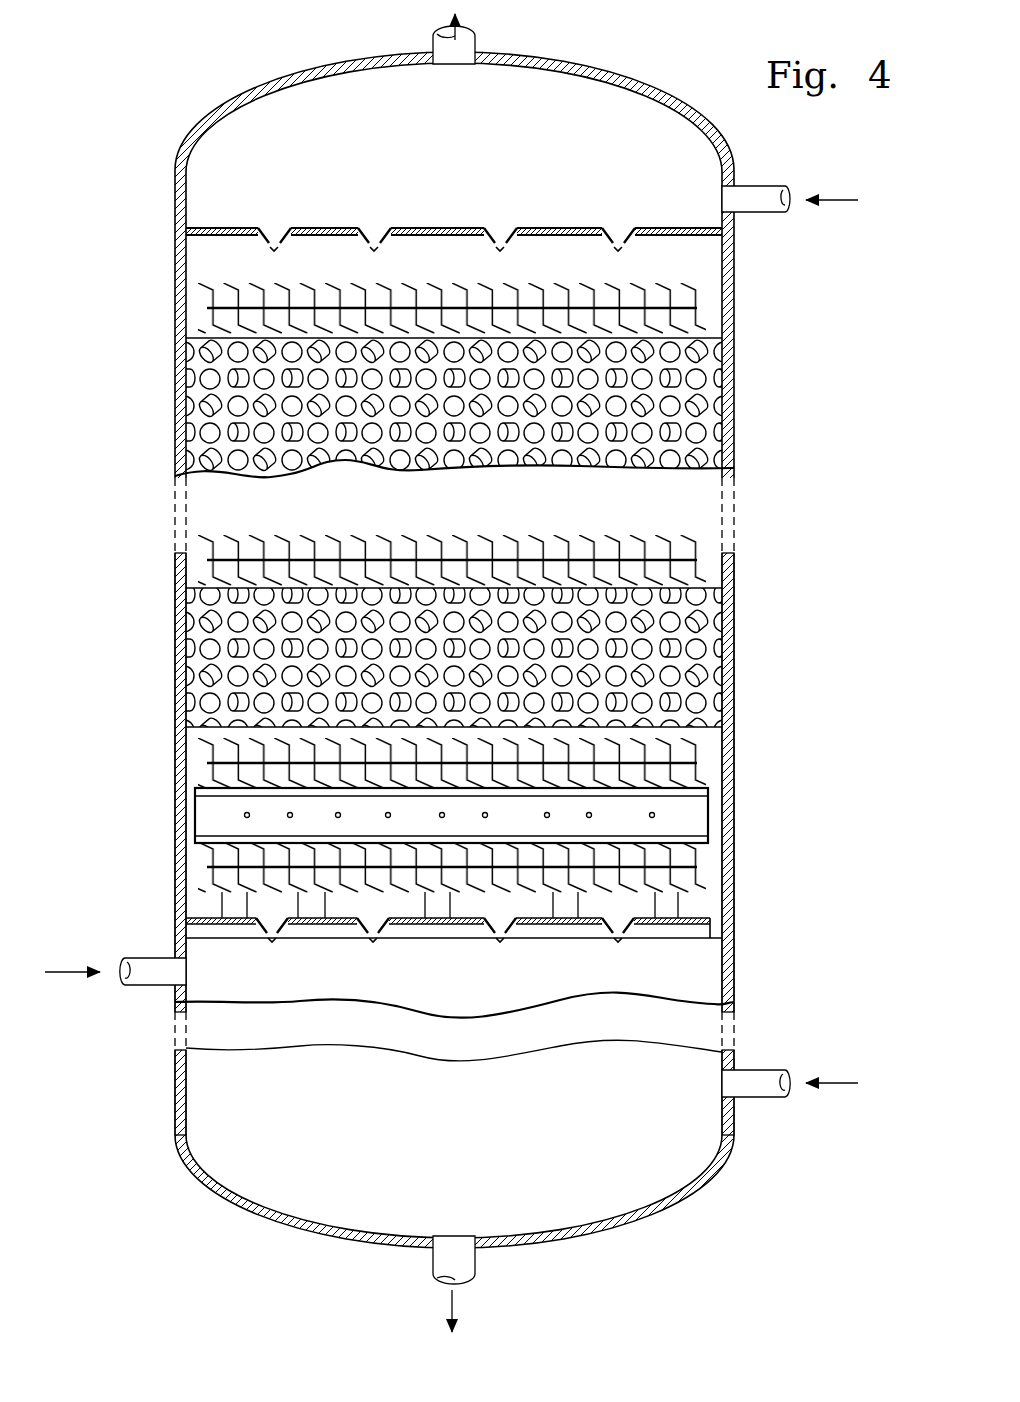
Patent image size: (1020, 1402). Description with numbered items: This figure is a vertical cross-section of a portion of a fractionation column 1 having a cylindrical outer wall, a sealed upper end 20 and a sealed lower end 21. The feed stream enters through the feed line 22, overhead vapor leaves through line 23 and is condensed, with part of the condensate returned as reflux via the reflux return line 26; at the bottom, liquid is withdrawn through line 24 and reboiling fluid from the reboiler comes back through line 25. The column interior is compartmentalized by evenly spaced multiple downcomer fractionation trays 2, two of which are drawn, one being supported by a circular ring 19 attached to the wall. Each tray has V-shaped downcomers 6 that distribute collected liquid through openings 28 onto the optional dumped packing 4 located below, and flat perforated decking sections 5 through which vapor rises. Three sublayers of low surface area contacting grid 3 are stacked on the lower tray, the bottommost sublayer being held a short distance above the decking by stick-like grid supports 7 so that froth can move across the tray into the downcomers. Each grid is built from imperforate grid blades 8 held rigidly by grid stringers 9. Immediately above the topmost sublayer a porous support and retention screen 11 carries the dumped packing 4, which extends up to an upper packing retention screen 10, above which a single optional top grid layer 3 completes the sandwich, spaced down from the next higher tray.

The fractionation column 1 is at (168, 781).
The multiple downcomer fractionation tray 2 is at (426, 223).
The low surface area contacting grid 3 is at (704, 289).
The dumped packing 4 is at (215, 675).
The perforated decking section 5 is at (450, 228).
The V-shaped downcomer 6 is at (273, 228).
The grid support 7 is at (586, 912).
The grid blade 8 is at (208, 827).
The grid stringer 9 is at (655, 816).
The upper packing retention screen 10 is at (690, 388).
The support and retention screen 11 is at (695, 710).
The circular ring 19 is at (328, 939).
The sealed upper end 20 is at (596, 63).
The sealed lower end 21 is at (622, 1226).
The feed line 22 is at (150, 958).
The overhead vapor line 23 is at (484, 58).
The bottoms liquid line 24 is at (478, 1270).
The reboiling fluid return line 25 is at (772, 1098).
The reflux return line 26 is at (776, 186).
The downcomer opening 28 is at (370, 249).